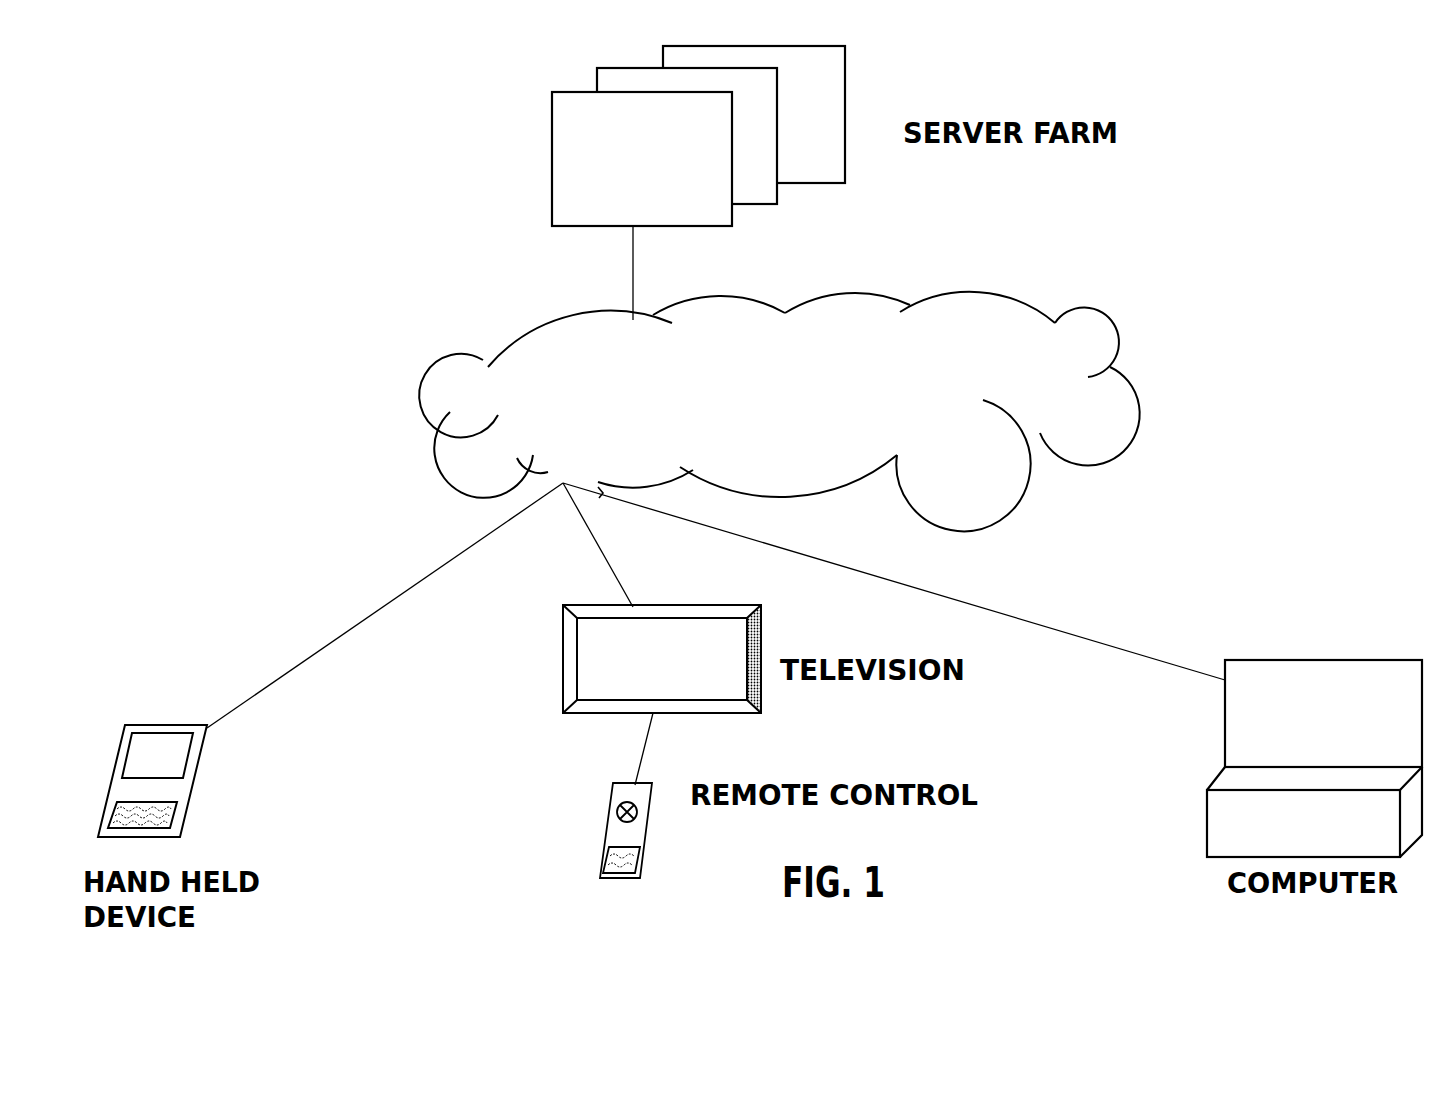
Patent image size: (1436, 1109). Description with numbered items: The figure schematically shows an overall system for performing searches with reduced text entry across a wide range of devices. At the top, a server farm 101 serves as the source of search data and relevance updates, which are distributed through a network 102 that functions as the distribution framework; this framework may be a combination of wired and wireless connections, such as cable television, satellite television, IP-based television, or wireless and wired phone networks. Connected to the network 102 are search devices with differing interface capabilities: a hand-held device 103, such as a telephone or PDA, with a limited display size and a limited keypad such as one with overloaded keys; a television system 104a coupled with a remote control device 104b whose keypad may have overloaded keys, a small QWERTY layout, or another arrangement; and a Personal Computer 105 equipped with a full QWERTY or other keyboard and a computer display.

The server farm 101 is at (661, 170).
The network 102 is at (792, 398).
The hand-held device 103 is at (135, 699).
The television system 104a is at (438, 684).
The remote control device 104b is at (475, 863).
The Personal Computer (PC) 105 is at (1296, 631).